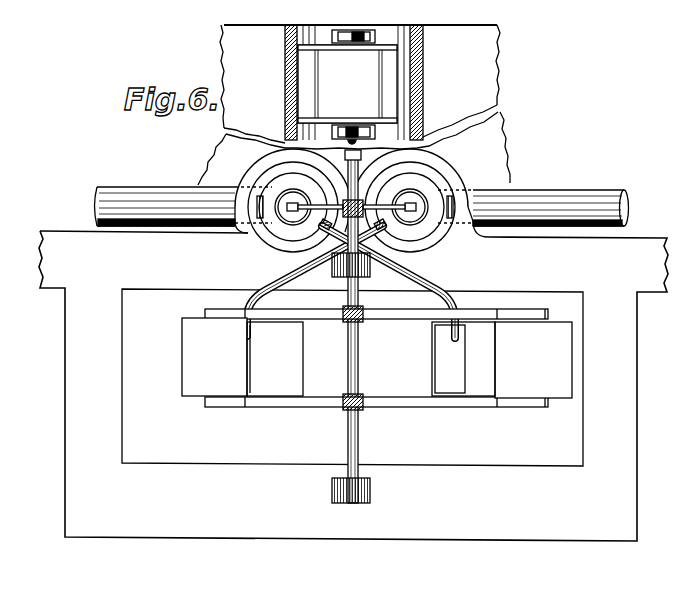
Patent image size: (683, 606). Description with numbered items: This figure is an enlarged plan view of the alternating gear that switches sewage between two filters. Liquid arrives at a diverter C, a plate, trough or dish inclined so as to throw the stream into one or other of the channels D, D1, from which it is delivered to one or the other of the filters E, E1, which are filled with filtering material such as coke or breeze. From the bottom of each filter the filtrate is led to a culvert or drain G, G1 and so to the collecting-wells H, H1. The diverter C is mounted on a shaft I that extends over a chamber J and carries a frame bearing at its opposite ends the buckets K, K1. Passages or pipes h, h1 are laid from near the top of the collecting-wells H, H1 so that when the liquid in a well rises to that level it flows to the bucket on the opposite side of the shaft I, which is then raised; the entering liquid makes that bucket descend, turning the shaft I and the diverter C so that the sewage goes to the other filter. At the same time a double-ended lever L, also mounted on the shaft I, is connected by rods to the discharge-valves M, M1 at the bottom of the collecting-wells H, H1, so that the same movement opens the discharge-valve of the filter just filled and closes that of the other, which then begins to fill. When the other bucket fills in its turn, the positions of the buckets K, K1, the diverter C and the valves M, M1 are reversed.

The diverter C is at (347, 87).
The channel D is at (420, 38).
The channel D1 is at (285, 38).
The filter E is at (466, 104).
The filter E1 is at (241, 105).
The culvert or drain G is at (556, 190).
The culvert or drain G1 is at (152, 191).
The collecting-well H is at (435, 233).
The collecting-well H1 is at (277, 232).
The discharge-valve M is at (399, 201).
The discharge-valve M1 is at (283, 203).
The double-ended lever L is at (316, 203).
The shaft I is at (359, 162).
The passage or pipe h is at (262, 279).
The passage or pipe h1 is at (436, 283).
The bucket K is at (502, 360).
The bucket K1 is at (242, 357).
The chamber J is at (353, 386).